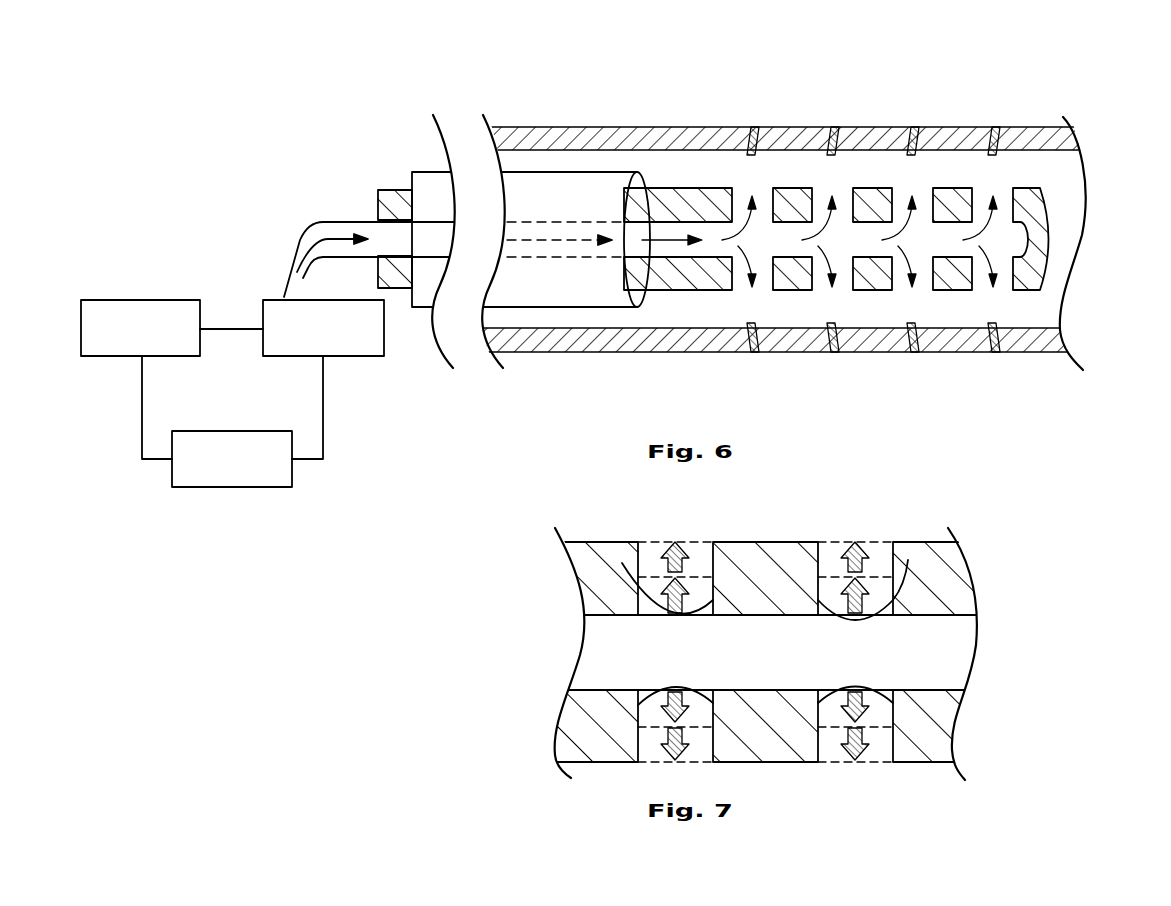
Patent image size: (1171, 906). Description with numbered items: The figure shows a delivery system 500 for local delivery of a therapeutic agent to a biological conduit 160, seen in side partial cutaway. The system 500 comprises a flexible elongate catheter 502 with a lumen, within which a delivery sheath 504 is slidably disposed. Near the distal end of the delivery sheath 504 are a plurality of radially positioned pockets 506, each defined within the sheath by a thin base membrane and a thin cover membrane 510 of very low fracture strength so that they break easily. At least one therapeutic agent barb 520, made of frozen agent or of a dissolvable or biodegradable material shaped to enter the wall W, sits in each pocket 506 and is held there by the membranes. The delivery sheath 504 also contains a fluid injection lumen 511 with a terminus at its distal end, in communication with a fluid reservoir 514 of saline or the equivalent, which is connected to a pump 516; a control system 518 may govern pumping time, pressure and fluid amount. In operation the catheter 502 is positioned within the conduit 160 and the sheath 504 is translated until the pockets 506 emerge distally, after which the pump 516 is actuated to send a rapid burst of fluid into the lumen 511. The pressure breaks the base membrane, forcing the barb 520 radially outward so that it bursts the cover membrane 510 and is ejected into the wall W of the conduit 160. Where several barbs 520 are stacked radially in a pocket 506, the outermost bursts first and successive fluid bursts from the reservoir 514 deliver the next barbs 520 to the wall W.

In FIG. 6, the delivery system 500 is at (419, 104).
In FIG. 6, the flexible elongate catheter 502 is at (567, 172).
In FIG. 6, the delivery sheath 504 is at (953, 290).
In FIG. 7, the delivery sheath 504 is at (757, 542).
In FIG. 7, the pockets 506 is at (625, 575).
In FIG. 7, the thin cover membrane 510 is at (870, 542).
In FIG. 6, the fluid injection lumen 511 is at (877, 250).
In FIG. 7, the fluid injection lumen 511 is at (588, 645).
In FIG. 6, the fluid reservoir 514 is at (372, 357).
In FIG. 6, the pump 516 is at (130, 300).
In FIG. 6, the control system 518 is at (218, 487).
In FIG. 6, the therapeutic agent barb 520 is at (832, 127).
In FIG. 7, the therapeutic agent barb 520 is at (870, 712).
In FIG. 6, the biological conduit 160 is at (1073, 176).
In FIG. 6, the wall W is at (625, 127).